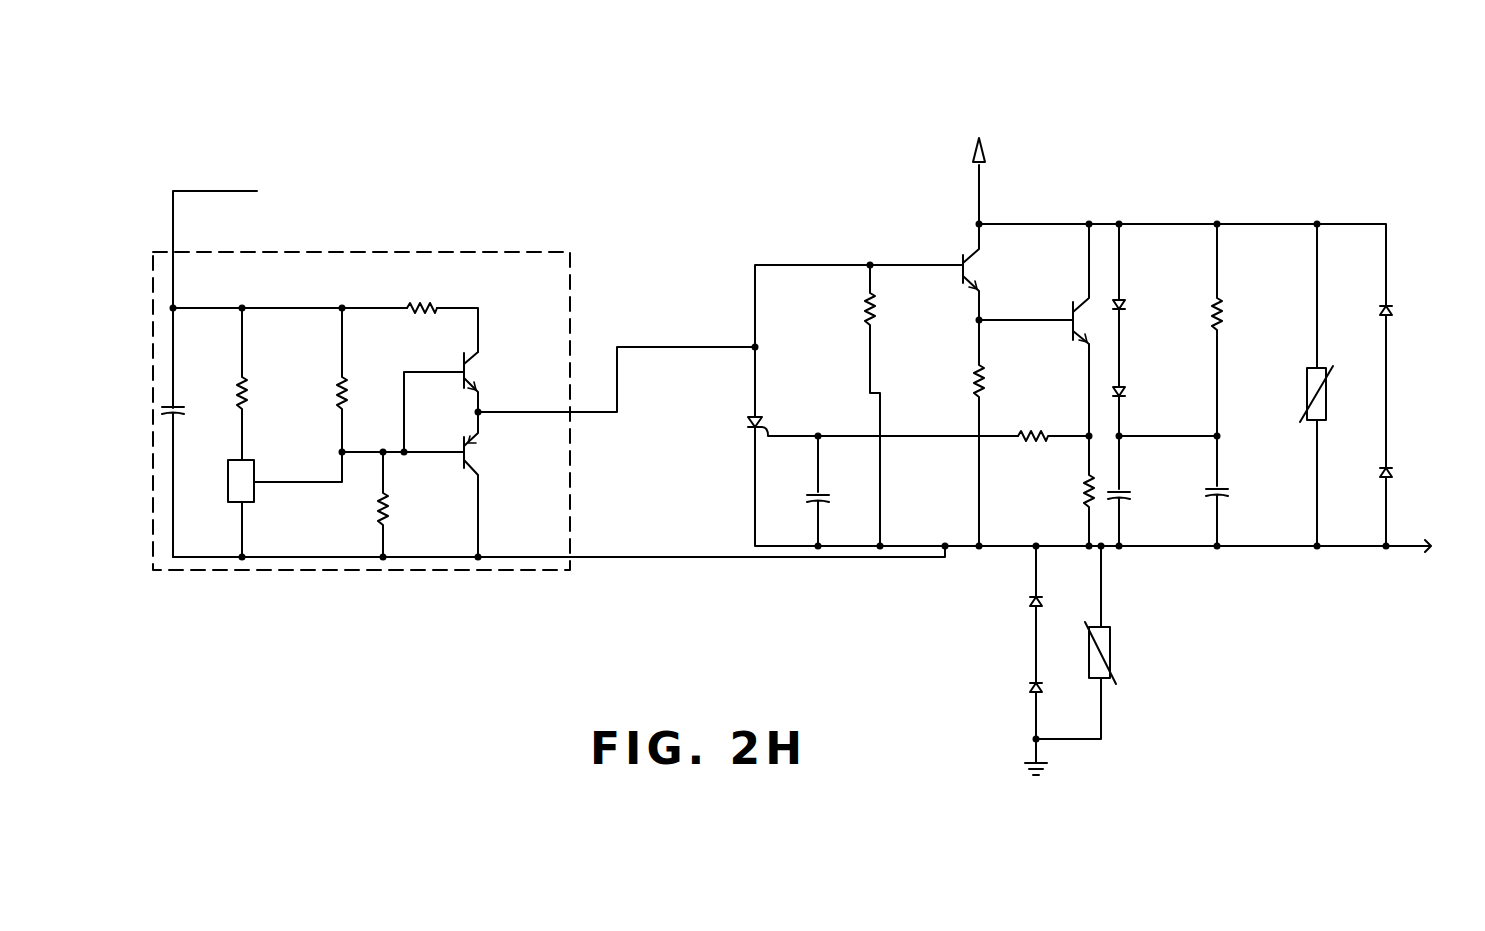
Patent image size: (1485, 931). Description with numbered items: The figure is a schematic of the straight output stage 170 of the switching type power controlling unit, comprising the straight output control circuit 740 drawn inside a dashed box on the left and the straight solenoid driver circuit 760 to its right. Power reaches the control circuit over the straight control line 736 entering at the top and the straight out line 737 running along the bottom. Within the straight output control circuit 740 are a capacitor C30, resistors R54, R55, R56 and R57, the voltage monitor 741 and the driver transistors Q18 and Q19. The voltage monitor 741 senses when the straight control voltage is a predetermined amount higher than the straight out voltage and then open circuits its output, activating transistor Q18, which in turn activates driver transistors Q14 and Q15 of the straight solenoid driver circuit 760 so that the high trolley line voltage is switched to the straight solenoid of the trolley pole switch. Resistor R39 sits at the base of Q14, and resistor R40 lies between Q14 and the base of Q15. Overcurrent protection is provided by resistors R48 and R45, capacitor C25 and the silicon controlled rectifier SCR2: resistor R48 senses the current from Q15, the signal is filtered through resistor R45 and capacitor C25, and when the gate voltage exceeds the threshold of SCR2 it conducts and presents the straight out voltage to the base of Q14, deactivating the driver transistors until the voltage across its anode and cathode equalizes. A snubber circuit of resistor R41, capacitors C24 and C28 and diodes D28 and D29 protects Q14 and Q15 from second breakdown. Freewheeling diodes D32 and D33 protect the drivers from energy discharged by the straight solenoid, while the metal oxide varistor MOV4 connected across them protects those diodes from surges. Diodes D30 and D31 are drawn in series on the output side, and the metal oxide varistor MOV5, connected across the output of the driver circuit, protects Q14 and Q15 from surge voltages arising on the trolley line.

The straight control line 736 is at (222, 191).
The straight out line 737 is at (307, 557).
The straight output control circuit 740 is at (578, 201).
The voltage monitor 741 is at (226, 491).
The straight solenoid driver circuit 760 is at (930, 191).
The straight output means 170 is at (1142, 172).
The capacitor C30 is at (186, 411).
The resistor R54 is at (246, 394).
The resistor R55 is at (340, 395).
The resistor R56 is at (390, 512).
The resistor R57 is at (424, 310).
The driver transistor Q18 is at (480, 373).
The driver transistor Q19 is at (480, 453).
The silicon controlled rectifier SCR2 is at (750, 416).
The resistor R39 is at (866, 308).
The resistor R40 is at (977, 381).
The capacitor C25 is at (814, 499).
The driver transistor Q14 is at (981, 270).
The driver transistor Q15 is at (1068, 323).
The resistor R45 is at (1032, 440).
The resistor R48 is at (1084, 495).
The diode D28 is at (1126, 312).
The diode D29 is at (1126, 398).
The capacitor C24 is at (1130, 498).
The resistor R41 is at (1223, 310).
The capacitor C28 is at (1228, 495).
The metal oxide varistor MOV5 is at (1306, 380).
The diode D30 is at (1394, 310).
The diode D31 is at (1394, 472).
The freewheeling diode D32 is at (1028, 600).
The freewheeling diode D33 is at (1028, 688).
The metal oxide varistor MOV4 is at (1112, 640).